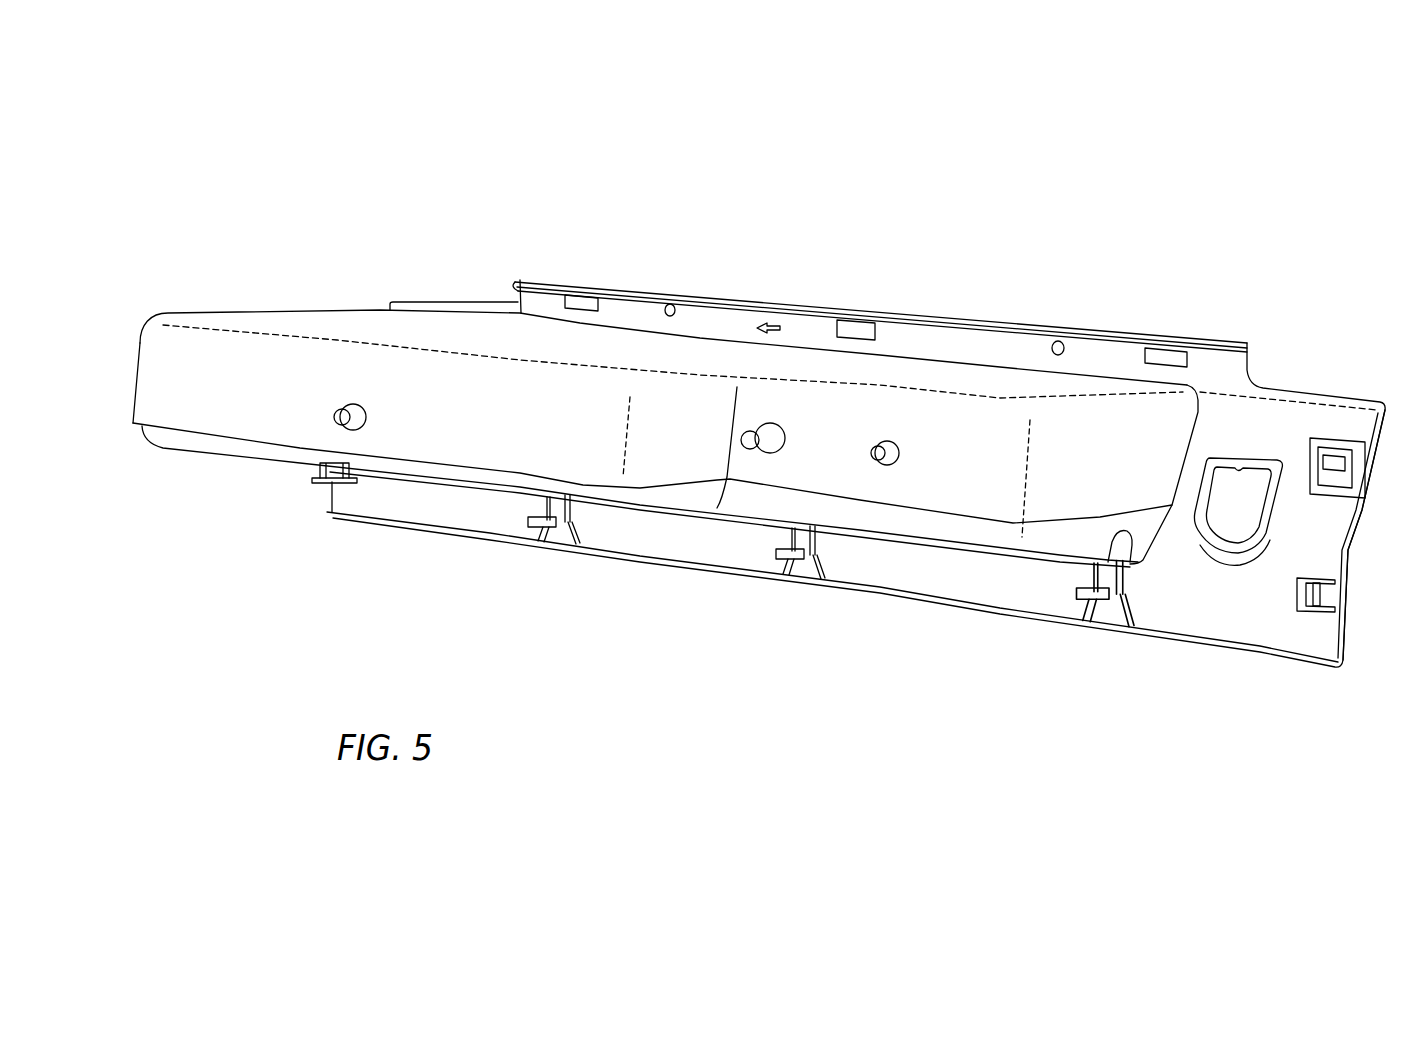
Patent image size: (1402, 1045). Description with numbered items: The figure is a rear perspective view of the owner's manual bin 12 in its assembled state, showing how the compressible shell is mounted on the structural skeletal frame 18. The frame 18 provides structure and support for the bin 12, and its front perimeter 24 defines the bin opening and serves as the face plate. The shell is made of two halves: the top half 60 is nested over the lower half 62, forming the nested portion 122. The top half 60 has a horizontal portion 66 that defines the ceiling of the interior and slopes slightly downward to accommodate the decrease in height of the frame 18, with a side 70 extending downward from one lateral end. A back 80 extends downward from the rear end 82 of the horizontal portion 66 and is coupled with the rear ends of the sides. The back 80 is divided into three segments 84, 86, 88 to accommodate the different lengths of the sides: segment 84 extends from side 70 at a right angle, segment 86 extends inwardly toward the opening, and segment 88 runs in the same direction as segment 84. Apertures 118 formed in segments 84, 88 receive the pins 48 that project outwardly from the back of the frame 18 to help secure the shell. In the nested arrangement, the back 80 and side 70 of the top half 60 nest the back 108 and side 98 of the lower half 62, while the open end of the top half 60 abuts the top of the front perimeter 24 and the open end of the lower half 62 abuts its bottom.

The owner's manual bin 12 is at (360, 163).
The structural skeletal frame 18 is at (1290, 388).
The front perimeter 24 is at (1353, 535).
The pins 48 is at (338, 410).
The half 60 is at (228, 310).
The half 62 is at (198, 450).
The horizontal portion 66 is at (453, 328).
The side 70 is at (1110, 443).
The back 80 is at (165, 362).
The rear end 82 is at (337, 338).
The segment 84 is at (833, 420).
The segment 86 is at (682, 412).
The segment 88 is at (562, 408).
The side 98 is at (1057, 536).
The back 108 is at (863, 515).
The apertures 118 is at (353, 430).
The nested portion 122 is at (590, 437).